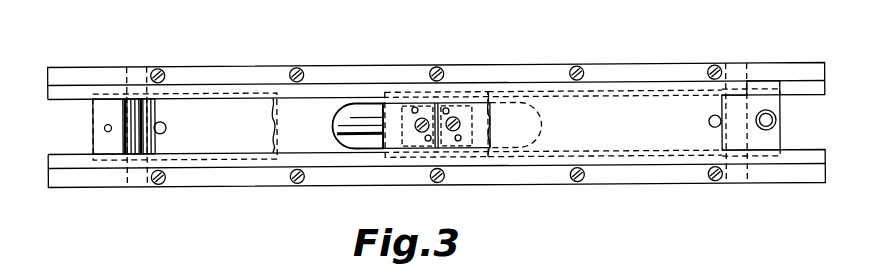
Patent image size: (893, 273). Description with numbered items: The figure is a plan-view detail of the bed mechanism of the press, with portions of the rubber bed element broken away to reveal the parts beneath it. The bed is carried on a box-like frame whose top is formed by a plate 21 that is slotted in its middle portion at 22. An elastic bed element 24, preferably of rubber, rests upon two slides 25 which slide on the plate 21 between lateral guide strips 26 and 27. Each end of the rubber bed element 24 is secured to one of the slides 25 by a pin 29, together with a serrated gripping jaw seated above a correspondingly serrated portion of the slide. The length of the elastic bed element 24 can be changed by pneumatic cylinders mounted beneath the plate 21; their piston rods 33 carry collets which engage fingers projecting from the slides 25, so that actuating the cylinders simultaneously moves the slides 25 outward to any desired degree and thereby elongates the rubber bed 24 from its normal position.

The plate 21 is at (297, 108).
The slot 22 is at (367, 103).
The elastic bed element 24 is at (553, 135).
The slide 25 is at (227, 135).
The lateral guide strip 26 is at (622, 72).
The lateral guide strip 27 is at (610, 178).
The pin 29 is at (166, 133).
The piston rod 33 is at (350, 117).